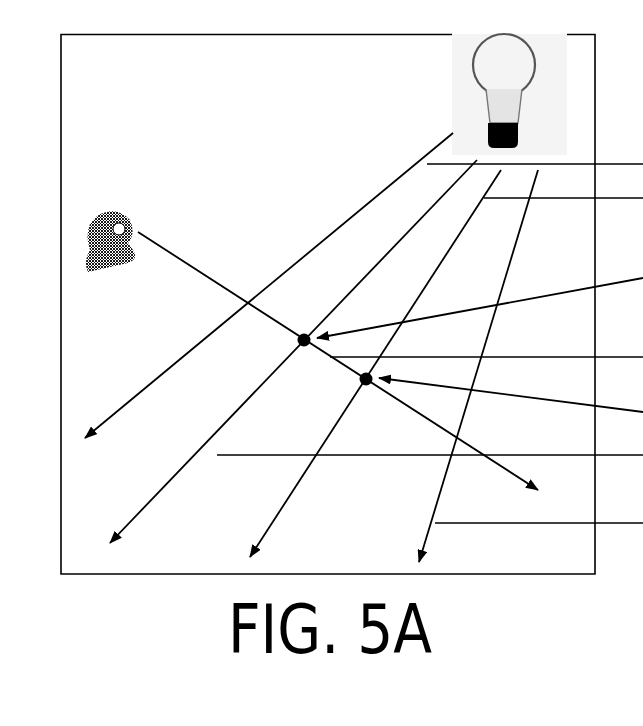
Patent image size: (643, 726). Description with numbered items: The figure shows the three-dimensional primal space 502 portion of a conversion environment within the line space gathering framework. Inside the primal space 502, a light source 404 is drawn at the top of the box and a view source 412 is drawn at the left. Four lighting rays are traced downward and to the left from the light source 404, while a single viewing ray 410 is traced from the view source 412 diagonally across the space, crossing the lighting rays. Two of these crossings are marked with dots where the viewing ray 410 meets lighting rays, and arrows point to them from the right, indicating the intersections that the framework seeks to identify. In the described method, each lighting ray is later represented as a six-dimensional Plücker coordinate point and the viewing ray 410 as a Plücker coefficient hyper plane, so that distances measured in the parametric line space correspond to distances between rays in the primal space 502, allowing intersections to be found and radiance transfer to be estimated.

The 3D primal space 502 is at (218, 106).
The light source 404 is at (522, 96).
The view source 412 is at (114, 212).
The viewing ray 410 is at (183, 262).